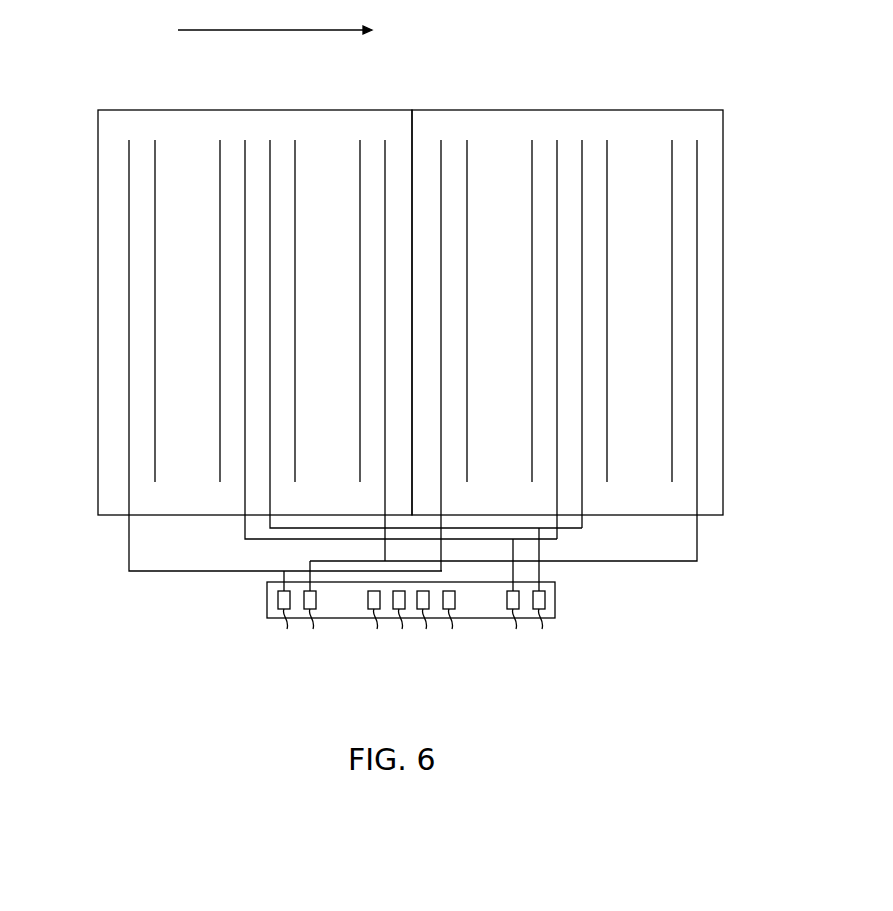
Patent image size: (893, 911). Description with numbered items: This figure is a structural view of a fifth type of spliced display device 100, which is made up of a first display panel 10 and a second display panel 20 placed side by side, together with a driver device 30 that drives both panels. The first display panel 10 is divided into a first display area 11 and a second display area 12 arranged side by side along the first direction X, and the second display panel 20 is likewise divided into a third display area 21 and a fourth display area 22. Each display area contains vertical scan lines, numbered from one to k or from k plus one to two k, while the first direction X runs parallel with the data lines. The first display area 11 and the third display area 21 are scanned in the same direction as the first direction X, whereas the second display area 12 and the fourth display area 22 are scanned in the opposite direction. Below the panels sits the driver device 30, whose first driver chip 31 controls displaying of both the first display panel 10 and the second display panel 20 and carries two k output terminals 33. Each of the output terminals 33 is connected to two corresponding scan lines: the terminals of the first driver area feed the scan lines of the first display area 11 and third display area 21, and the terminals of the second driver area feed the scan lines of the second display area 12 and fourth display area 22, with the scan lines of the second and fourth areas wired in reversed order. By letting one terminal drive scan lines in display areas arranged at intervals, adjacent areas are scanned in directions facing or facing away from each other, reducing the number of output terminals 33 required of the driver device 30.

The spliced display device 100 is at (134, 45).
The first display panel 10 is at (98, 317).
The second display panel 20 is at (723, 317).
The first display area 11 is at (244, 100).
The second display area 12 is at (395, 100).
The third display area 21 is at (555, 100).
The fourth display area 22 is at (712, 100).
The driver device 30 is at (555, 600).
The first driver chip 31 is at (380, 589).
The output terminals 33 is at (278, 600).